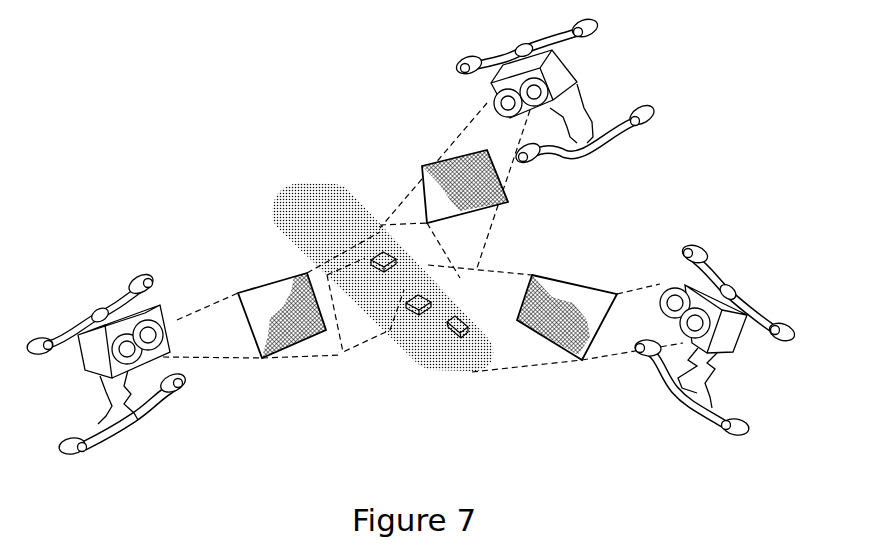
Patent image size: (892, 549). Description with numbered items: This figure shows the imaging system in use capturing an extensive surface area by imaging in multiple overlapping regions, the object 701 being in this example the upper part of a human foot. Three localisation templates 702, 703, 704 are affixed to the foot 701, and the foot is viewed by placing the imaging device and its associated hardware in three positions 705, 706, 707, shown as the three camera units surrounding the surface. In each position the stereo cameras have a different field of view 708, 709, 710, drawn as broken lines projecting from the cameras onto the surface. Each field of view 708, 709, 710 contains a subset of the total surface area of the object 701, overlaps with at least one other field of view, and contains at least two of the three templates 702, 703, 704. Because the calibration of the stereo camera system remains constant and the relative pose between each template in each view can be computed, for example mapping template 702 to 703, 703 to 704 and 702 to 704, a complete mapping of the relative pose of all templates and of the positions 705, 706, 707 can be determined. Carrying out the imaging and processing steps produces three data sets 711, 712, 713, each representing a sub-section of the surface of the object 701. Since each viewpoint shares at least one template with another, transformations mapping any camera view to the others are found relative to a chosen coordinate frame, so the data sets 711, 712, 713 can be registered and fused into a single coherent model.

The object 701 is at (313, 205).
The localisation template 702 is at (388, 257).
The localisation template 703 is at (406, 305).
The localisation template 704 is at (456, 333).
The position 705 is at (582, 132).
The position 706 is at (105, 332).
The position 707 is at (690, 382).
The field of view 708 is at (436, 338).
The field of view 709 is at (377, 327).
The field of view 710 is at (395, 228).
The data set 711 is at (277, 292).
The data set 712 is at (567, 292).
The data set 713 is at (465, 178).